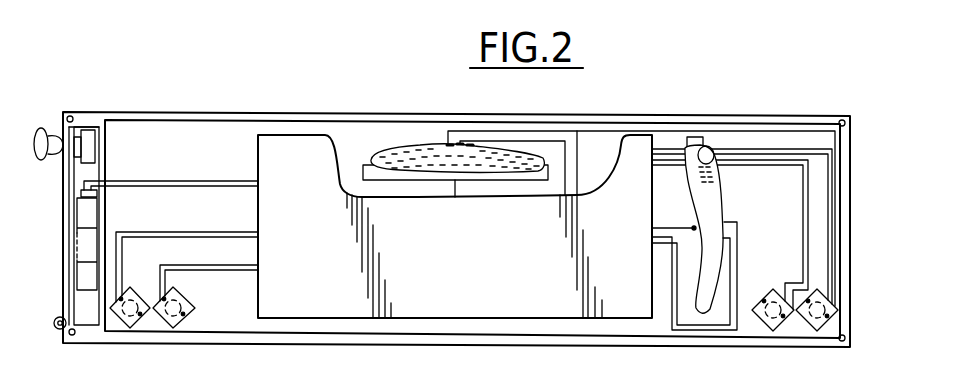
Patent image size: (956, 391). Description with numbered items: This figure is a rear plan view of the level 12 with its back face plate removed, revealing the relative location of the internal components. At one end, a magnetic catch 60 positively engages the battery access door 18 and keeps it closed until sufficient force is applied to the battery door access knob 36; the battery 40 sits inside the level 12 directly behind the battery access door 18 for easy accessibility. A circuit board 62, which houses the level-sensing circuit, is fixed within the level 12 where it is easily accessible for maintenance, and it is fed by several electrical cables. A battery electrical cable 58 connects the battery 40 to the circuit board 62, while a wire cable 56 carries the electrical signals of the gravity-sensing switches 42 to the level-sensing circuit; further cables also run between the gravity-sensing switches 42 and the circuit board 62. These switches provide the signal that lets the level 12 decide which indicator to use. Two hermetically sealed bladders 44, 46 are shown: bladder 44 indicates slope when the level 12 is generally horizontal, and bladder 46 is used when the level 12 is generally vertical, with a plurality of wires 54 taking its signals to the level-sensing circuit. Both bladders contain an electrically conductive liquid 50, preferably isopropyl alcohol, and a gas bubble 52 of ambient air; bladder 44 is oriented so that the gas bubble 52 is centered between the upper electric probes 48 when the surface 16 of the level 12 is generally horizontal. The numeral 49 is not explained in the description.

The level 12 is at (302, 111).
The surface 16 is at (453, 345).
The battery access door 18 is at (63, 193).
The battery door access knob 36 is at (43, 127).
The battery 40 is at (80, 270).
The gravity-sensing switch 42 is at (143, 317).
The hermetically sealed bladder 44 is at (384, 147).
The hermetically sealed bladder 46 is at (714, 137).
The upper electric probes 48 is at (446, 132).
The support plate 49 is at (548, 156).
The electrically conductive liquid 50 is at (504, 151).
The gas bubble 52 is at (439, 143).
The wires 54 is at (660, 247).
The wire cable 56 is at (229, 263).
The battery electrical cable 58 is at (168, 179).
The magnetic catch 60 is at (91, 133).
The circuit board 62 is at (506, 250).